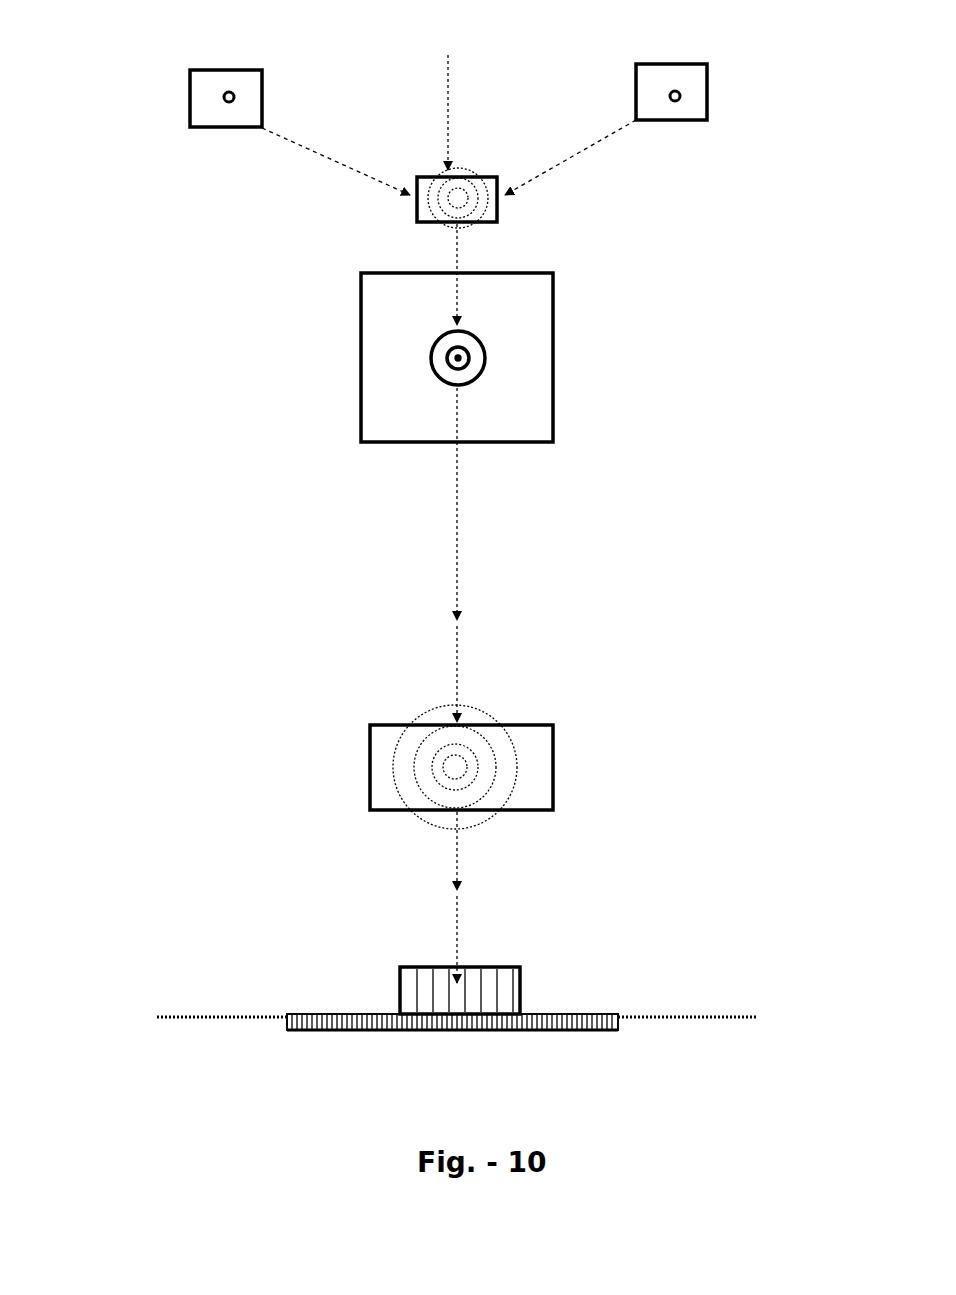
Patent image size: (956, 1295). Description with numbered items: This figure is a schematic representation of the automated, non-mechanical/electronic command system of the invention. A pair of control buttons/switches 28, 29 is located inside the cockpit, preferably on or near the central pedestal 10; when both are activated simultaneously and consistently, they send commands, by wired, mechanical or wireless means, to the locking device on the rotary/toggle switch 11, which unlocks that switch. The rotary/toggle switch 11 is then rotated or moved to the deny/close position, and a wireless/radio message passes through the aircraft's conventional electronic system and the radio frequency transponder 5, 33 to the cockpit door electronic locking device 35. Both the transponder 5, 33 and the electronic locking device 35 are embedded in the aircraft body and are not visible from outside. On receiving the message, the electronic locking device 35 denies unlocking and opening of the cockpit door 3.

The radio frequency transponder 5 is at (447, 497).
The control button/switch 28 is at (186, 96).
The control button/switch 29 is at (713, 96).
The central pedestal 10 is at (537, 448).
The rotary/toggle switch 11 is at (493, 362).
The radio frequency transponder 33 is at (560, 765).
The cockpit door electronic locking device 35 is at (497, 962).
The cockpit door 3 is at (440, 1035).